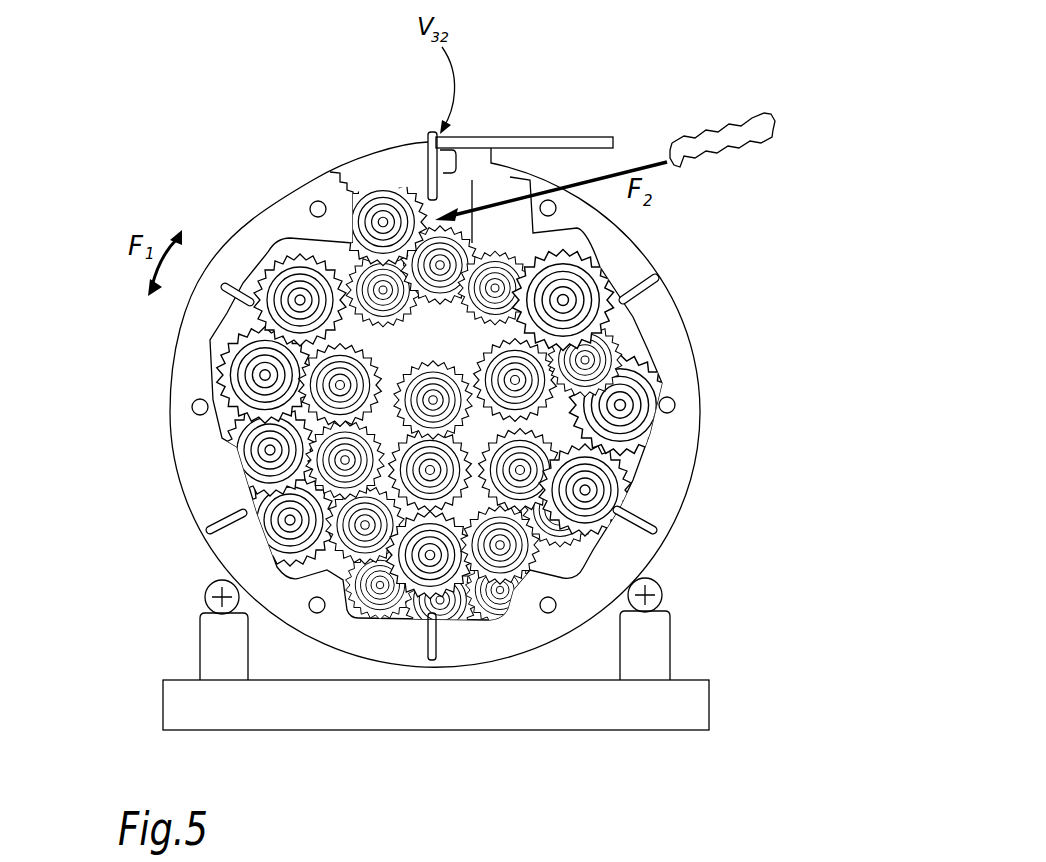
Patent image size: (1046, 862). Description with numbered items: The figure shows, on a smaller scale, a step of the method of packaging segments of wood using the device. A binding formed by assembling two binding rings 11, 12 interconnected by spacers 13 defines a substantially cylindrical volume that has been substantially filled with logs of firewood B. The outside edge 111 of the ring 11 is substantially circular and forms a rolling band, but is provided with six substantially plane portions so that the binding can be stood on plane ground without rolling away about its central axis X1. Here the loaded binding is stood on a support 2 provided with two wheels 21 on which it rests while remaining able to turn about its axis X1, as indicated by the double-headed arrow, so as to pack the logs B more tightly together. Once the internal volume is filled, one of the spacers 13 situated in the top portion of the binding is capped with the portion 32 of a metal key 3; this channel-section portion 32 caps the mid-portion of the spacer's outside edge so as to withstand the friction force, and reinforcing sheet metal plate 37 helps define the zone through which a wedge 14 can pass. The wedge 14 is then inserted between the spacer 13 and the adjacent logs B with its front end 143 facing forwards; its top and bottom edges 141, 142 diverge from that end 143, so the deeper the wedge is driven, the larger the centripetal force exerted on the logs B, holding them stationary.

The support 2 is at (210, 710).
The key 3 is at (580, 113).
The binding ring 11 is at (230, 443).
The binding ring 12 is at (400, 155).
The spacer 13 is at (427, 182).
The wedge 14 is at (750, 128).
The wheel 21 is at (210, 588).
The portion of the key 32 is at (431, 140).
The reinforcing sheet metal plate 37 is at (467, 150).
The outside edge of ring 111 is at (697, 490).
The top edge of wedge 141 is at (719, 100).
The bottom edge of wedge 142 is at (758, 177).
The front end of wedge 143 is at (685, 152).
The logs of firewood B is at (295, 385).
The central axis X1 is at (622, 358).